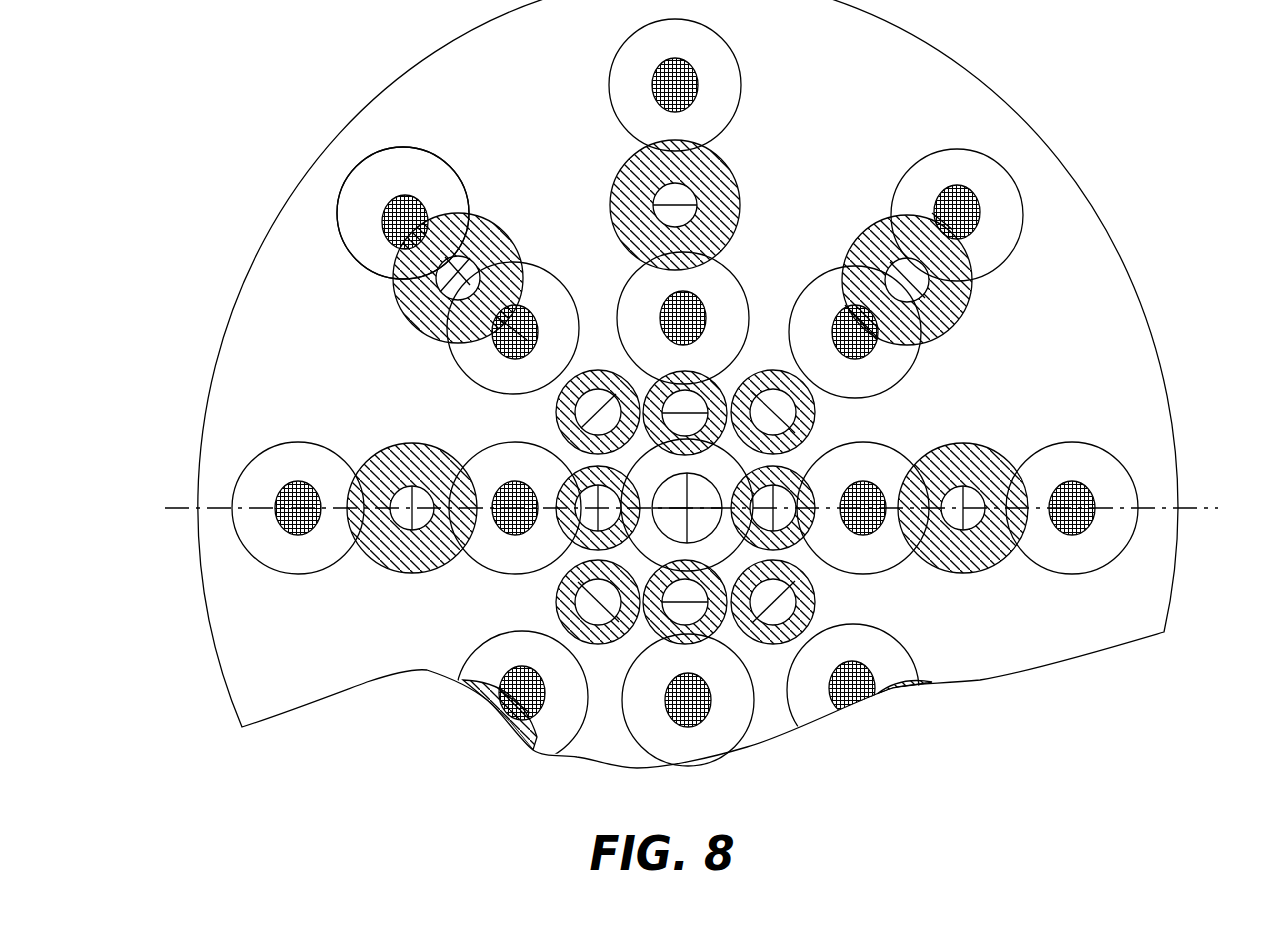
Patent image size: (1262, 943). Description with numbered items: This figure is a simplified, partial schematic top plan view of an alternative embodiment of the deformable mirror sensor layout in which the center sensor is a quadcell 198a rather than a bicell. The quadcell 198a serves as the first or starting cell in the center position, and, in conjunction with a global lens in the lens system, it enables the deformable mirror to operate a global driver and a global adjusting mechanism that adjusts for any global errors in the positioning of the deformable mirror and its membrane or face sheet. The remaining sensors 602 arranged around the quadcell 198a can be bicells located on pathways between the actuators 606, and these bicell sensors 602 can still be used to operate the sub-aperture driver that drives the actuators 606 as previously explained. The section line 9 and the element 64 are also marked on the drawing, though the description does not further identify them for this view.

The optical fiber 64 is at (392, 242).
The actuators 606 is at (450, 367).
The sensors 602 is at (655, 400).
The quadcell 198a is at (703, 473).
The section line 9- 9 is at (143, 470).